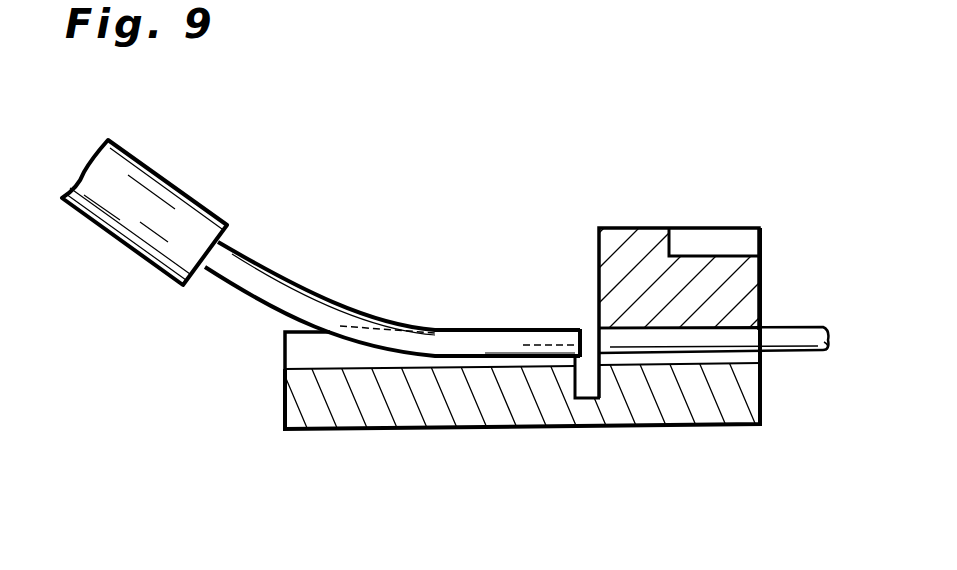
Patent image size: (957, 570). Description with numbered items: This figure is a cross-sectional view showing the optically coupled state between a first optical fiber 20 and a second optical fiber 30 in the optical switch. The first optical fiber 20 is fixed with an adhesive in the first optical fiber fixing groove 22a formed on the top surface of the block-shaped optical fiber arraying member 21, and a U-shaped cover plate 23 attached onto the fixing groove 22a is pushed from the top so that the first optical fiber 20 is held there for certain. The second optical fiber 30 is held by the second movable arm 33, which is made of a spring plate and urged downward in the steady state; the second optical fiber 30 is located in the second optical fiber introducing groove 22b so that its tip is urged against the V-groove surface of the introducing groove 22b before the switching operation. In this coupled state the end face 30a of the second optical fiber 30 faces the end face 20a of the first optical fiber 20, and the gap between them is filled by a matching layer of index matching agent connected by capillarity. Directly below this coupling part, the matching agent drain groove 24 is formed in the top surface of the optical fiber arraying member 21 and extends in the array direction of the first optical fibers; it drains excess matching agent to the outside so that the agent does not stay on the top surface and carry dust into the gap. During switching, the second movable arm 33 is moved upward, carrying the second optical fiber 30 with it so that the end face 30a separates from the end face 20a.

The first optical fiber 20 is at (806, 327).
The end face of first optical fiber 20a is at (602, 343).
The optical fiber arraying member 21 is at (352, 430).
The first optical fiber fixing groove 22a is at (737, 368).
The second optical fiber introducing groove 22b is at (296, 352).
The cover plate 23 is at (650, 228).
The matching agent drain groove 24 is at (583, 398).
The second optical fiber 30 is at (268, 283).
The end face of second optical fiber 30a is at (590, 345).
The second movable arm 33 is at (170, 183).